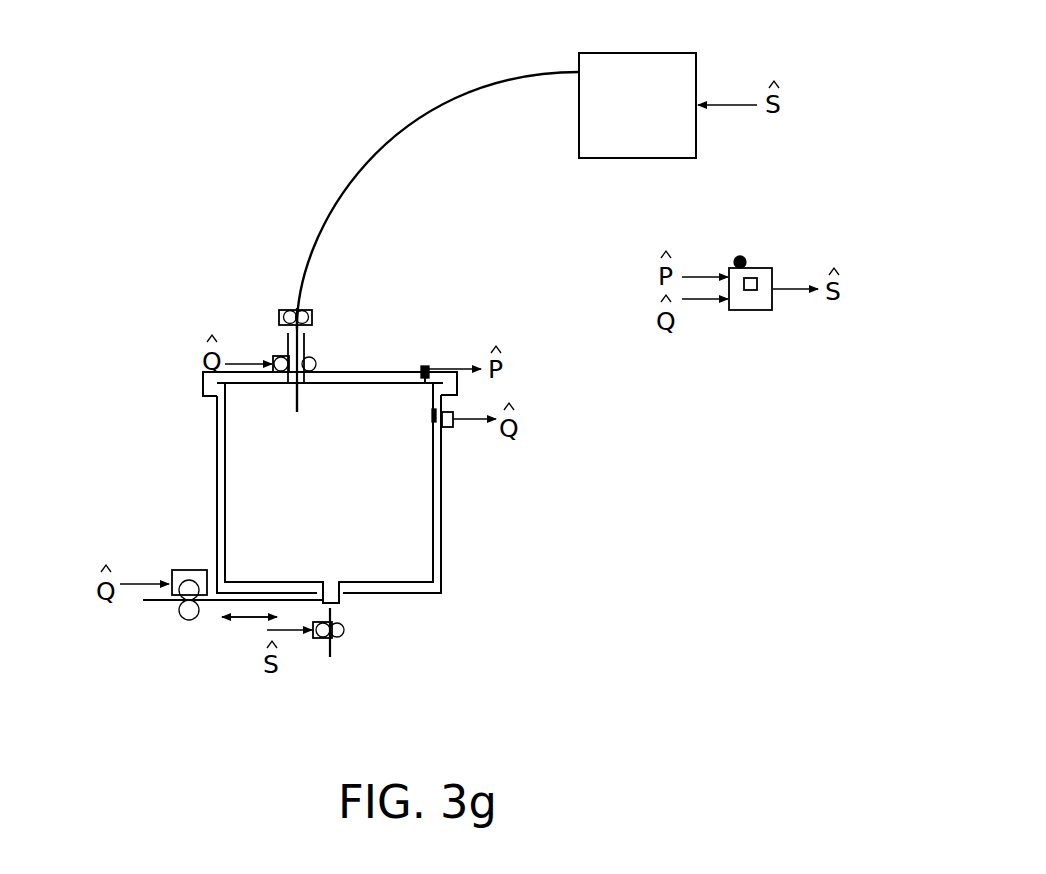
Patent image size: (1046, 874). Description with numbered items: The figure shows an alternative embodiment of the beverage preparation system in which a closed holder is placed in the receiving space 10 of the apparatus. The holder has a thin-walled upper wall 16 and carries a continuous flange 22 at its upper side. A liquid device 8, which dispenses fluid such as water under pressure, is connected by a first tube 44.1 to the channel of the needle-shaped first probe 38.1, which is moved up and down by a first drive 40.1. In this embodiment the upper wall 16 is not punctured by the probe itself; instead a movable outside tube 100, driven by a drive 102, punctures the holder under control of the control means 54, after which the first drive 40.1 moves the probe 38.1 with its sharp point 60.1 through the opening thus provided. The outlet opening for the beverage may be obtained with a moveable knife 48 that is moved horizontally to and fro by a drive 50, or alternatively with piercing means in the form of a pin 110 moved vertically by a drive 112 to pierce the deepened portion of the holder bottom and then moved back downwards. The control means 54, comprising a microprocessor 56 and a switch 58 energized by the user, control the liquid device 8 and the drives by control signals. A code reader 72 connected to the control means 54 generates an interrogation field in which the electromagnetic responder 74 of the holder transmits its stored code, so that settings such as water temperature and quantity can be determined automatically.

The liquid device 8 is at (615, 135).
The first tube 44.1 is at (375, 147).
The first drive 40.1 is at (283, 312).
The first probe 38.1 is at (300, 307).
The outside tube 100 is at (305, 343).
The drive 102 is at (277, 357).
The point 60.1 is at (290, 403).
The upper wall 16 is at (357, 384).
The receiving space 10 is at (441, 562).
The continuous flange 22 is at (343, 598).
The electromagnetic responder 74 is at (468, 453).
The code reader 72 is at (453, 427).
The drive 50 is at (182, 570).
The moveable knife 48 is at (212, 600).
The pin 110 is at (337, 637).
The drive 112 is at (322, 638).
The control means 54 is at (756, 300).
The microprocessor 56 is at (755, 280).
The switch 58 is at (743, 258).